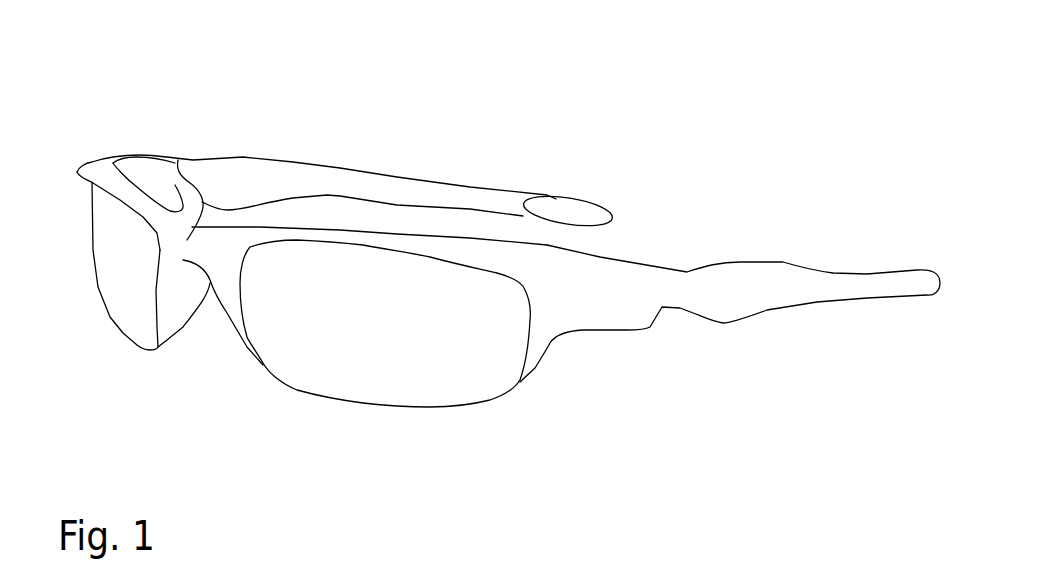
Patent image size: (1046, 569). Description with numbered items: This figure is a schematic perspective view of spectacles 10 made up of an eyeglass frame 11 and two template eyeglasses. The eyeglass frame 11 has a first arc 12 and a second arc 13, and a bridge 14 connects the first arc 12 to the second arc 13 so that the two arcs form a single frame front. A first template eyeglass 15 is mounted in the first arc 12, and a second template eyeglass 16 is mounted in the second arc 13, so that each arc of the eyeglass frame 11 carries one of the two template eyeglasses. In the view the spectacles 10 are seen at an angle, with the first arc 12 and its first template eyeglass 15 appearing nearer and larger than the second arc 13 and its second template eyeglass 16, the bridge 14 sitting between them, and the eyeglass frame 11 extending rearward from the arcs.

The spectacles 10 is at (68, 113).
The eyeglass frame 11 is at (527, 247).
The first arc 12 is at (407, 243).
The second arc 13 is at (113, 177).
The bridge 14 is at (178, 160).
The first template eyeglass 15 is at (500, 368).
The second template eyeglass 16 is at (113, 288).